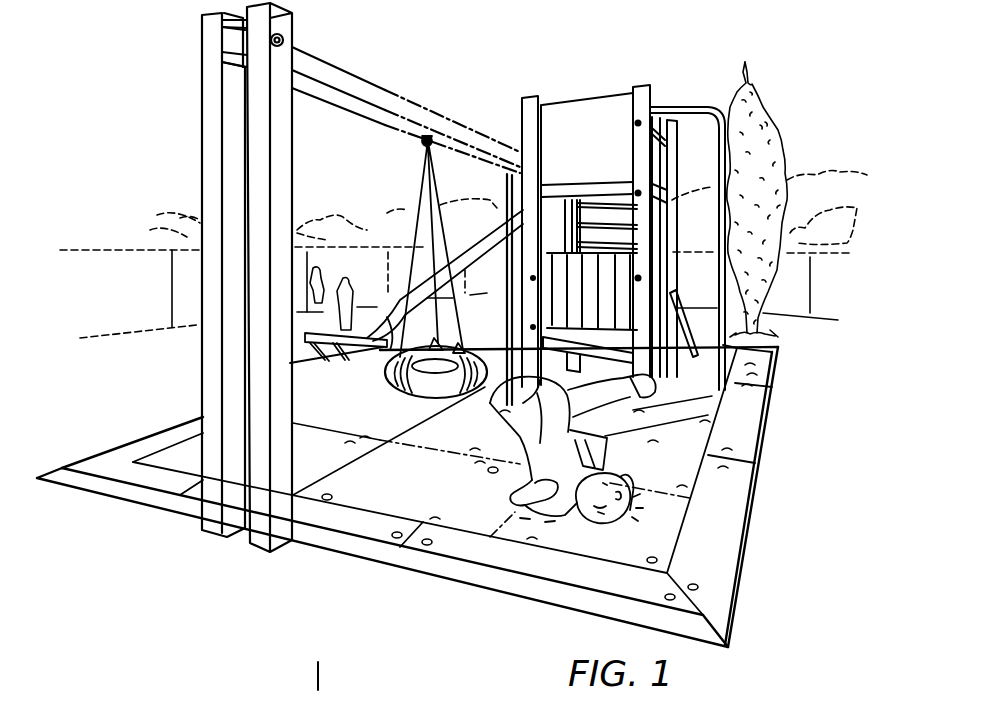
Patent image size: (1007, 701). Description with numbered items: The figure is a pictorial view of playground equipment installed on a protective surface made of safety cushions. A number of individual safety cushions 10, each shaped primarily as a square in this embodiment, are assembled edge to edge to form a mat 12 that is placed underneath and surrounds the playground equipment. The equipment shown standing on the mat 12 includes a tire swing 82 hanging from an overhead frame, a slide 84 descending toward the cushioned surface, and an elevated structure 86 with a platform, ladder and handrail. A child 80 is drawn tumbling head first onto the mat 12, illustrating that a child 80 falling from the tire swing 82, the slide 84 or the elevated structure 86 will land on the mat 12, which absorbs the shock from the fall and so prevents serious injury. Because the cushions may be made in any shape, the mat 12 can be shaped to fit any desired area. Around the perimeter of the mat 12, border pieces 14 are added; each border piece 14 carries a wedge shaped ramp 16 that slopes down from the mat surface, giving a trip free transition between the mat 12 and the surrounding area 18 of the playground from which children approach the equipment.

The safety cushion 10 is at (341, 421).
The mat 12 is at (320, 573).
The border piece 14 is at (556, 576).
The wedge shaped ramp 16 is at (474, 580).
The area surrounding the mat 18 is at (810, 478).
The child 80 is at (514, 481).
The tire swing 82 is at (387, 390).
The slide 84 is at (406, 289).
The elevated structure 86 is at (668, 362).